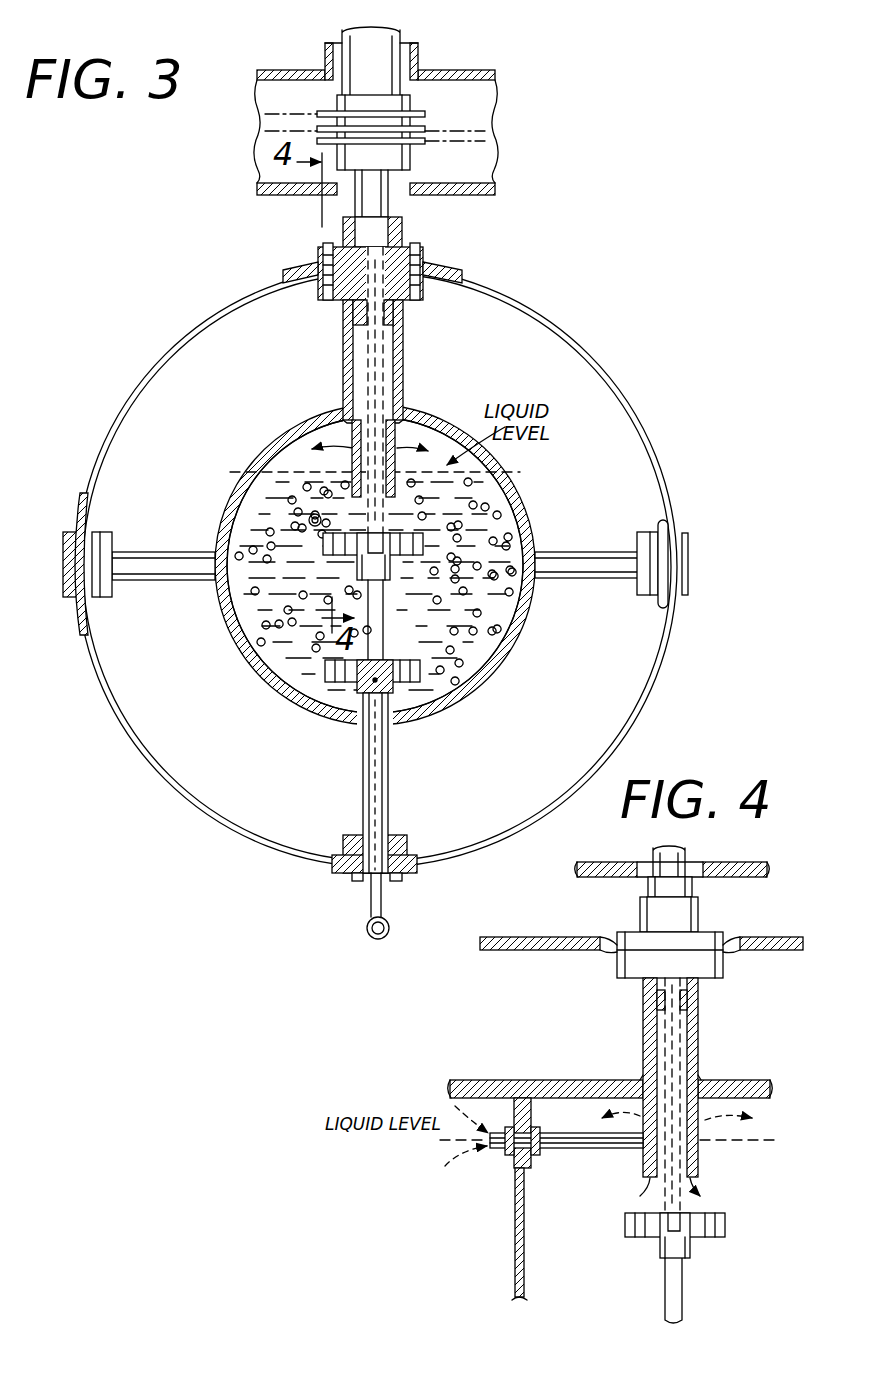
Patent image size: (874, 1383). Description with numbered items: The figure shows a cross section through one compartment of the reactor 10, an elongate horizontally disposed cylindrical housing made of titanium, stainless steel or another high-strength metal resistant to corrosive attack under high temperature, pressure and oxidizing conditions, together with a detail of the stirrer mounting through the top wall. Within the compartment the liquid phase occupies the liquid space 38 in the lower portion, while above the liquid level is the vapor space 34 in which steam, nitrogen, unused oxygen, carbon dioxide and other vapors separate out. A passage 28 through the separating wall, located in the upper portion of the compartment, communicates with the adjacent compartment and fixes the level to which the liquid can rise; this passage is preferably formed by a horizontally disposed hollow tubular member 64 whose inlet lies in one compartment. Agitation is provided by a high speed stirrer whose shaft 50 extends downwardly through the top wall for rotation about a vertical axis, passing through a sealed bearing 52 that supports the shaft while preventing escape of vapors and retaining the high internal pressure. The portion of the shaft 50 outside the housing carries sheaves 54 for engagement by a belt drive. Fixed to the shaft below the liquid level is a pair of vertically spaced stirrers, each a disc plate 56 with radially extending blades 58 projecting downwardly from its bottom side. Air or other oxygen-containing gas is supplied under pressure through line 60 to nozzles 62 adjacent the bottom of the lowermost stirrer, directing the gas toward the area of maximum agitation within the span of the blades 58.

In FIG. 3, the reactor 10 is at (278, 423).
In FIG. 4, the reactor 10 is at (483, 1080).
In FIG. 4, the passage 28 is at (496, 1150).
In FIG. 3, the vapor space 34 is at (422, 433).
In FIG. 3, the liquid space 38 is at (498, 617).
In FIG. 3, the shaft 50 is at (380, 347).
In FIG. 4, the shaft 50 is at (685, 1286).
In FIG. 3, the sealed bearing 52 is at (390, 313).
In FIG. 3, the sheaves 54 is at (415, 125).
In FIG. 3, the disc plate 56 is at (430, 538).
In FIG. 4, the disc plate 56 is at (718, 1212).
In FIG. 3, the blades 58 is at (418, 548).
In FIG. 4, the blades 58 is at (722, 1225).
In FIG. 3, the line 60 is at (367, 932).
In FIG. 3, the nozzles 62 is at (393, 708).
In FIG. 4, the hollow tubular member 64 is at (600, 1148).